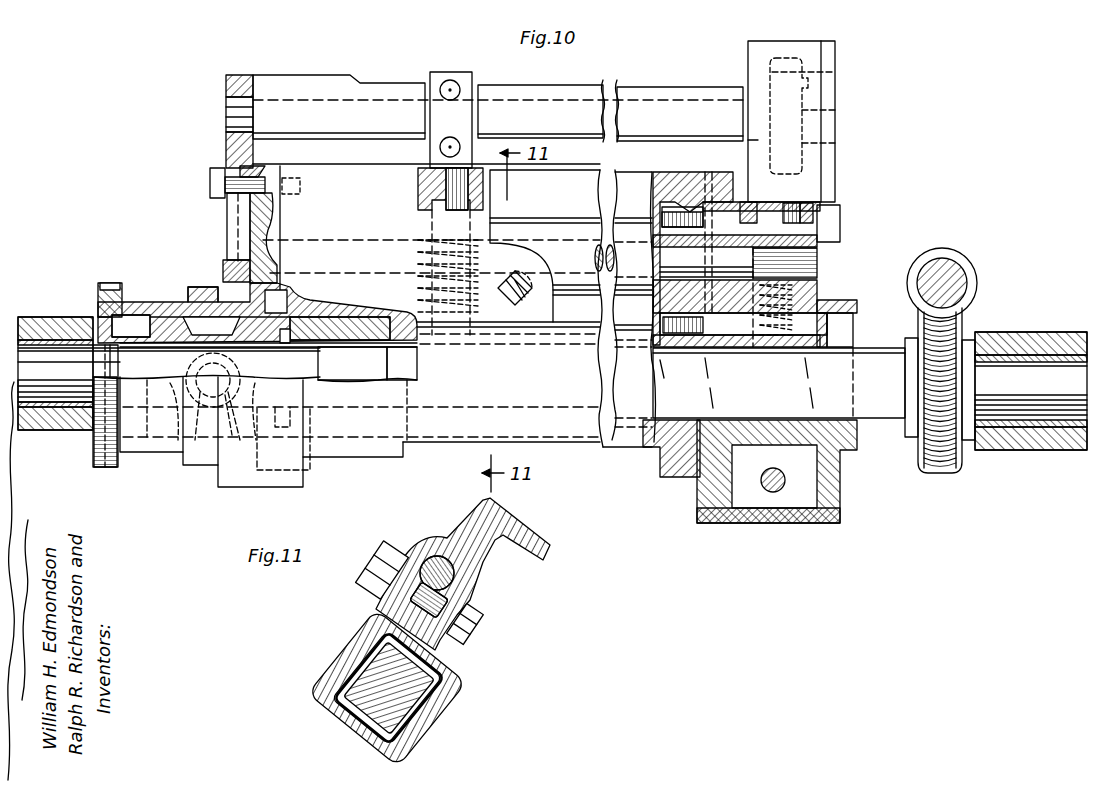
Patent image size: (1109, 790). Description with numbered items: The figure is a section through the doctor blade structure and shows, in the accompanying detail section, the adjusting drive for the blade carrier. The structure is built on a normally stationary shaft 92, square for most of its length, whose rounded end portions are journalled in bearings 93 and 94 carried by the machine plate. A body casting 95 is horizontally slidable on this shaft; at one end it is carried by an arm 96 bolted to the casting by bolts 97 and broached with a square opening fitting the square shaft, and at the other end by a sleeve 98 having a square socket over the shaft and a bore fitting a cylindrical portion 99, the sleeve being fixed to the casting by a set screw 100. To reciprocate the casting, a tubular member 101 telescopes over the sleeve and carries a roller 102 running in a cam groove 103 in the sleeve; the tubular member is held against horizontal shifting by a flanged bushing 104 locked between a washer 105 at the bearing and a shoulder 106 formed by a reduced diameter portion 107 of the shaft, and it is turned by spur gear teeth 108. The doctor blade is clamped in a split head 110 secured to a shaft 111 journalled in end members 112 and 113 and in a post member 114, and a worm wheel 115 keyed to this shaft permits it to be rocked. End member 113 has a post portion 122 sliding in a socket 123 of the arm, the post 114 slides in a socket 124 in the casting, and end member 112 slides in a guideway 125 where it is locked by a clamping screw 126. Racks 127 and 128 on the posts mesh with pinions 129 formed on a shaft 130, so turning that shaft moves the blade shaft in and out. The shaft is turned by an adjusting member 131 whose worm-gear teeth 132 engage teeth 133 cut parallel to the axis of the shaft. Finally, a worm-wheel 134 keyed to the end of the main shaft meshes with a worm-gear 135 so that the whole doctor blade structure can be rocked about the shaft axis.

In FIG. 10, the shaft 92 is at (660, 452).
In FIG. 11, the shaft 92 is at (370, 672).
In FIG. 10, the bearing 93 is at (65, 318).
In FIG. 10, the bearing 94 is at (1032, 333).
In FIG. 10, the body casting 95 is at (472, 445).
In FIG. 11, the body casting 95 is at (463, 665).
In FIG. 10, the arm 96 is at (832, 298).
In FIG. 10, the bolts 97 is at (656, 214).
In FIG. 10, the sleeve 98 is at (255, 362).
In FIG. 10, the cylindrical portion 99 is at (168, 302).
In FIG. 10, the set screw 100 is at (352, 462).
In FIG. 10, the tubular member 101 is at (200, 287).
In FIG. 10, the roller 102 is at (203, 411).
In FIG. 10, the cam groove 103 is at (240, 350).
In FIG. 10, the flanged bushing 104 is at (131, 326).
In FIG. 10, the washer 105 is at (88, 393).
In FIG. 10, the shoulder 106 is at (125, 406).
In FIG. 10, the reduced diameter portion 107 is at (100, 363).
In FIG. 10, the spur gear teeth 108 is at (117, 283).
In FIG. 10, the split head 110 is at (388, 84).
In FIG. 10, the shaft 111 is at (686, 100).
In FIG. 10, the end member 112 is at (230, 80).
In FIG. 10, the end member 113 is at (748, 66).
In FIG. 10, the post member 114 is at (440, 176).
In FIG. 10, the worm wheel 115 is at (837, 72).
In FIG. 10, the post portion 122 is at (806, 210).
In FIG. 10, the socket 123 is at (812, 226).
In FIG. 10, the socket 124 is at (418, 180).
In FIG. 10, the guideway 125 is at (272, 222).
In FIG. 10, the clamping screw 126 is at (216, 172).
In FIG. 10, the rack 127 is at (430, 236).
In FIG. 10, the rack 128 is at (775, 352).
In FIG. 10, the pinion 129 is at (426, 218).
In FIG. 10, the shaft 130 is at (552, 240).
In FIG. 11, the shaft 130 is at (455, 571).
In FIG. 10, the adjusting member 131 is at (505, 300).
In FIG. 11, the adjusting member 131 is at (393, 588).
In FIG. 11, the worm-gear teeth 132 is at (410, 606).
In FIG. 11, the teeth 133 is at (452, 590).
In FIG. 10, the worm-wheel 134 is at (940, 476).
In FIG. 10, the worm-gear 135 is at (962, 268).